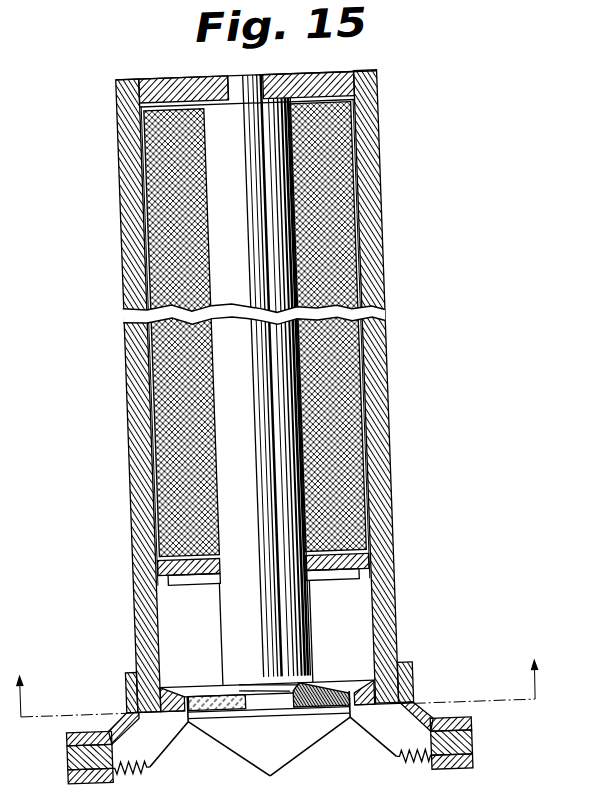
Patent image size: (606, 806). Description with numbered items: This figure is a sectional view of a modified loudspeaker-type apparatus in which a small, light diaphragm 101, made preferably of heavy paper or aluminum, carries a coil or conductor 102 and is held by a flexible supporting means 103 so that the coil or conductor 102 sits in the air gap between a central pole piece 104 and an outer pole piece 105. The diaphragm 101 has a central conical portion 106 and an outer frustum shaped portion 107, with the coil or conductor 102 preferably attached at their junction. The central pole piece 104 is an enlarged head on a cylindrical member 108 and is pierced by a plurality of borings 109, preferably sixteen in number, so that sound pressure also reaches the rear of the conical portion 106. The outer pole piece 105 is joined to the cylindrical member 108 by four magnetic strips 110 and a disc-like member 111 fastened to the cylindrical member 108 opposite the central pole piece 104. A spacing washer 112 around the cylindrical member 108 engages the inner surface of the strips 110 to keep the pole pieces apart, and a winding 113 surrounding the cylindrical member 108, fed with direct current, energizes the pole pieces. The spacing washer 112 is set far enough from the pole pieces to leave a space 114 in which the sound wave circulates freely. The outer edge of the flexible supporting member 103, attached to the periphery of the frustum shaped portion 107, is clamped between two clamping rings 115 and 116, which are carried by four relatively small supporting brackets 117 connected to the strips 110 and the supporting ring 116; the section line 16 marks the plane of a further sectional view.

The diaphragm 101 is at (298, 752).
The coil or conductor 102 is at (342, 685).
The flexible supporting means 103 is at (397, 767).
The central pole piece 104 is at (325, 683).
The outer pole piece 105 is at (356, 709).
The central conical portion 106 is at (214, 751).
The outer frustum shaped portion 107 is at (168, 735).
The cylindrical member 108 is at (259, 376).
The borings 109 is at (195, 688).
The strips 110 is at (392, 627).
The disc-like member 111 is at (329, 74).
The spacing washer 112 is at (326, 578).
The winding 113 is at (349, 495).
The space 114 is at (200, 638).
The clamping ring 115 is at (462, 768).
The clamping ring (supporting ring) 116 is at (463, 754).
The supporting brackets 117 is at (404, 677).
The section line 16- 16 is at (285, 677).